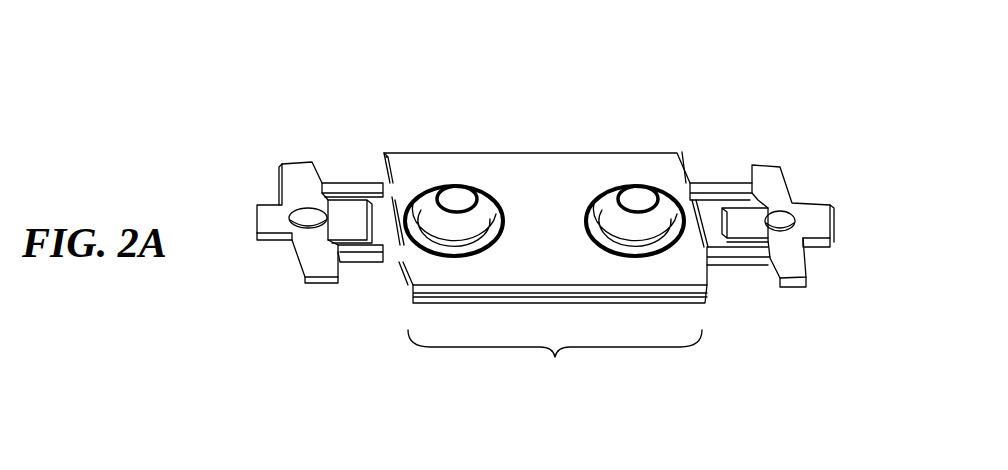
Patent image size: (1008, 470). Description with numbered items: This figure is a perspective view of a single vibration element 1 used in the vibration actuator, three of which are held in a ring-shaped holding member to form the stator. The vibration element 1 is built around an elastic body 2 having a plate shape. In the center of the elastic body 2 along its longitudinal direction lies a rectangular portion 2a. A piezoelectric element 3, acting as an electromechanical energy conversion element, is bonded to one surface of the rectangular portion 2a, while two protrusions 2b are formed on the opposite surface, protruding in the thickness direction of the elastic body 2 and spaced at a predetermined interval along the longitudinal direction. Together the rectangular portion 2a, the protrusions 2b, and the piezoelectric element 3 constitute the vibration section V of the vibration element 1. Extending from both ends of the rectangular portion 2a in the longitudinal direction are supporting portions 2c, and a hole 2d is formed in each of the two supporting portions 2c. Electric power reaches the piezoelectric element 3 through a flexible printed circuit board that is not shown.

The vibration element 1 is at (555, 49).
The elastic body 2 is at (690, 148).
The rectangular portion 2a is at (522, 260).
The protrusions 2b is at (637, 196).
The supporting portions 2c is at (290, 173).
The hole 2d is at (291, 218).
The piezoelectric element 3 is at (686, 303).
The vibration section V is at (555, 359).